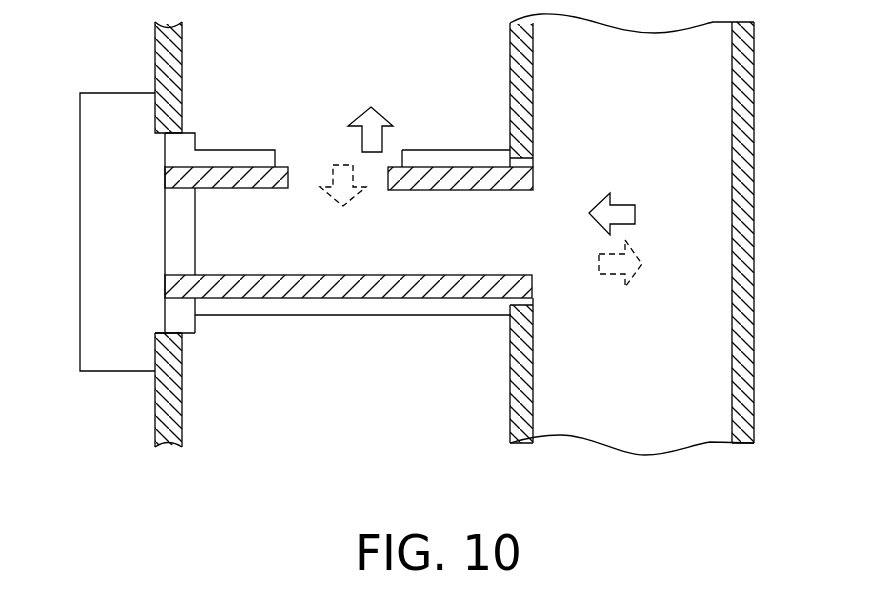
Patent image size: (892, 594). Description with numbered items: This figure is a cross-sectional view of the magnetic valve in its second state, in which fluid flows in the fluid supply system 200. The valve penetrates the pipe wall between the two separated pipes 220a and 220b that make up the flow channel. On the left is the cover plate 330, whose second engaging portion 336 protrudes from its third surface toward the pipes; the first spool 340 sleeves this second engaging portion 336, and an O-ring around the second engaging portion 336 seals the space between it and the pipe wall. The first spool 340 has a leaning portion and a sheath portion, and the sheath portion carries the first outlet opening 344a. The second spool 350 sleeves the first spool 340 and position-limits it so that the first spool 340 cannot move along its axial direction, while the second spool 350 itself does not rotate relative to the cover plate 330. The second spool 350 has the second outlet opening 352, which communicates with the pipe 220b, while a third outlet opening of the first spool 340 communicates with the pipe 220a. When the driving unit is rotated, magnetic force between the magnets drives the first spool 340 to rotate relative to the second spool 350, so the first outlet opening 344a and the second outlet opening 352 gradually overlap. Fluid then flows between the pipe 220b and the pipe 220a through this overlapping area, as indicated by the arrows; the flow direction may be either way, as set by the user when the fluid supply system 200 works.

The fluid supply system 200 is at (818, 548).
The pipe 220a is at (632, 234).
The pipe 220b is at (426, 114).
The cover plate 330 is at (107, 115).
The second engaging portion 336 is at (153, 197).
The first spool 340 is at (338, 288).
The first outlet opening 344a is at (304, 181).
The second spool 350 is at (233, 308).
The second outlet opening 352 is at (292, 159).